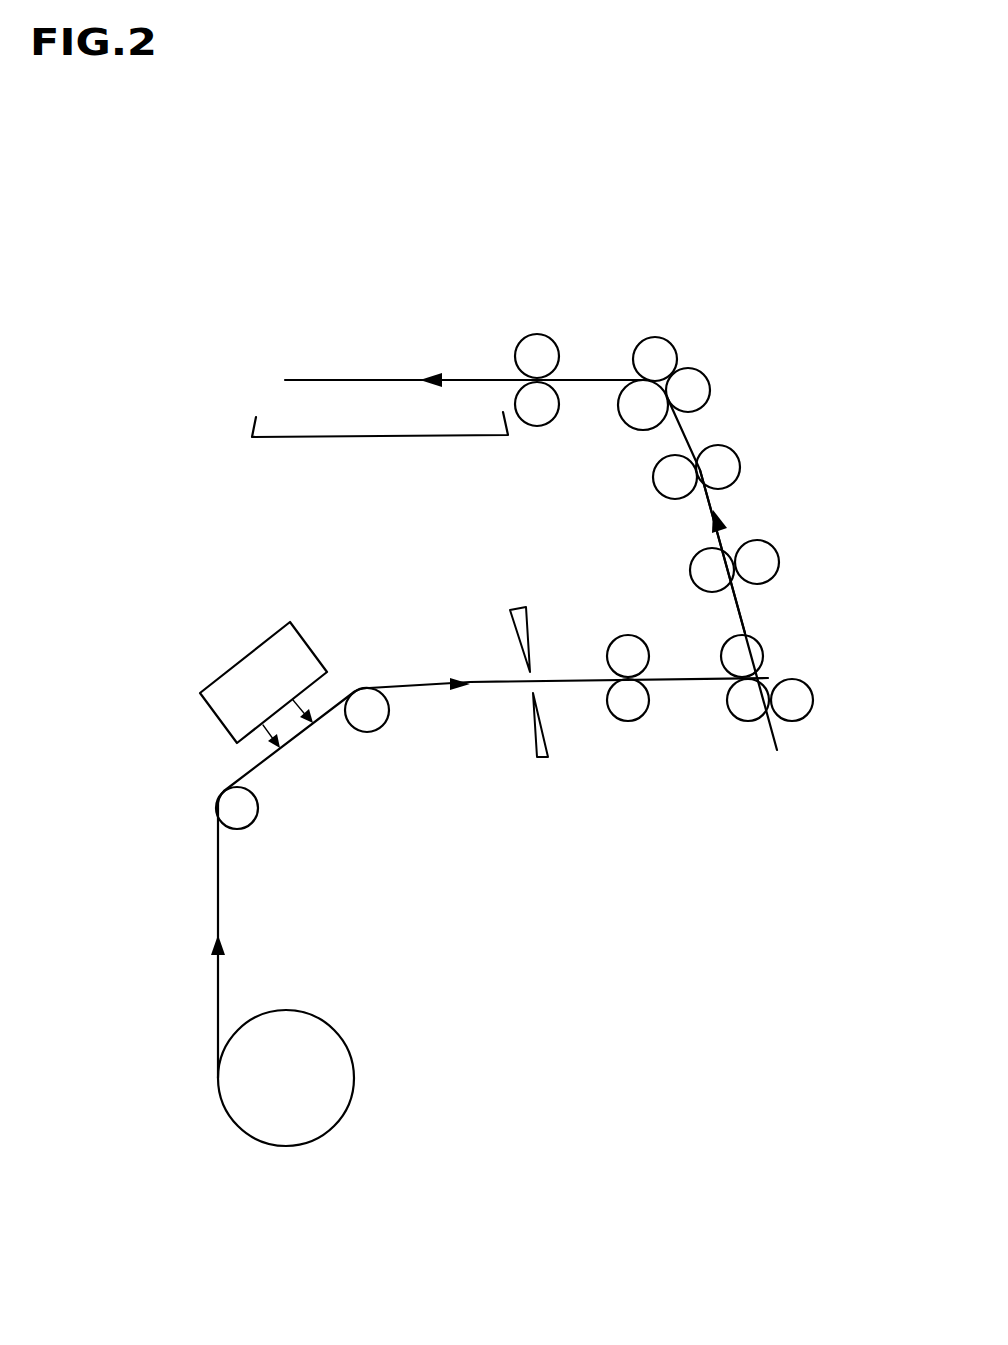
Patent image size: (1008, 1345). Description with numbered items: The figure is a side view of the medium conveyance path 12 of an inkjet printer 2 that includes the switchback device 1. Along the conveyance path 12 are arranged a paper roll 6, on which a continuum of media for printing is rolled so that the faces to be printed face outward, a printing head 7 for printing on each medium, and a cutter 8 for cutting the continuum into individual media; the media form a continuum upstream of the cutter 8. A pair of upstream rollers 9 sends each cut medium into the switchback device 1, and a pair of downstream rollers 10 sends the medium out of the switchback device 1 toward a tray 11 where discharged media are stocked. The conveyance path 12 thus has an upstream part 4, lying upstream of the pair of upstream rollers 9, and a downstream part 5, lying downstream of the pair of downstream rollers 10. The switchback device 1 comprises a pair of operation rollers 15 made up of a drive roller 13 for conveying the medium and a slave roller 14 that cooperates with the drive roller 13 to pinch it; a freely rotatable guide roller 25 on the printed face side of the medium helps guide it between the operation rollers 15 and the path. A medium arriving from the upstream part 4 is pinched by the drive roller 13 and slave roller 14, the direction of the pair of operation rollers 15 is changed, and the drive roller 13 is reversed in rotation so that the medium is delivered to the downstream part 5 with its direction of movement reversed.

The switchback device 1 is at (830, 666).
The inkjet printer 2 is at (240, 529).
The upstream part 4 is at (548, 676).
The downstream part 5 is at (723, 538).
The paper roll 6 is at (340, 1062).
The printing head 7 is at (235, 680).
The cutter 8 is at (513, 622).
The pair of upstream rollers 9 is at (619, 649).
The pair of downstream rollers 10 is at (730, 578).
The tray 11 is at (288, 437).
The conveyance path 12 is at (215, 1005).
The drive roller 13 is at (748, 718).
The slave roller 14 is at (805, 755).
The pair of operation rollers 15 is at (776, 785).
The guide roller 25 is at (727, 662).